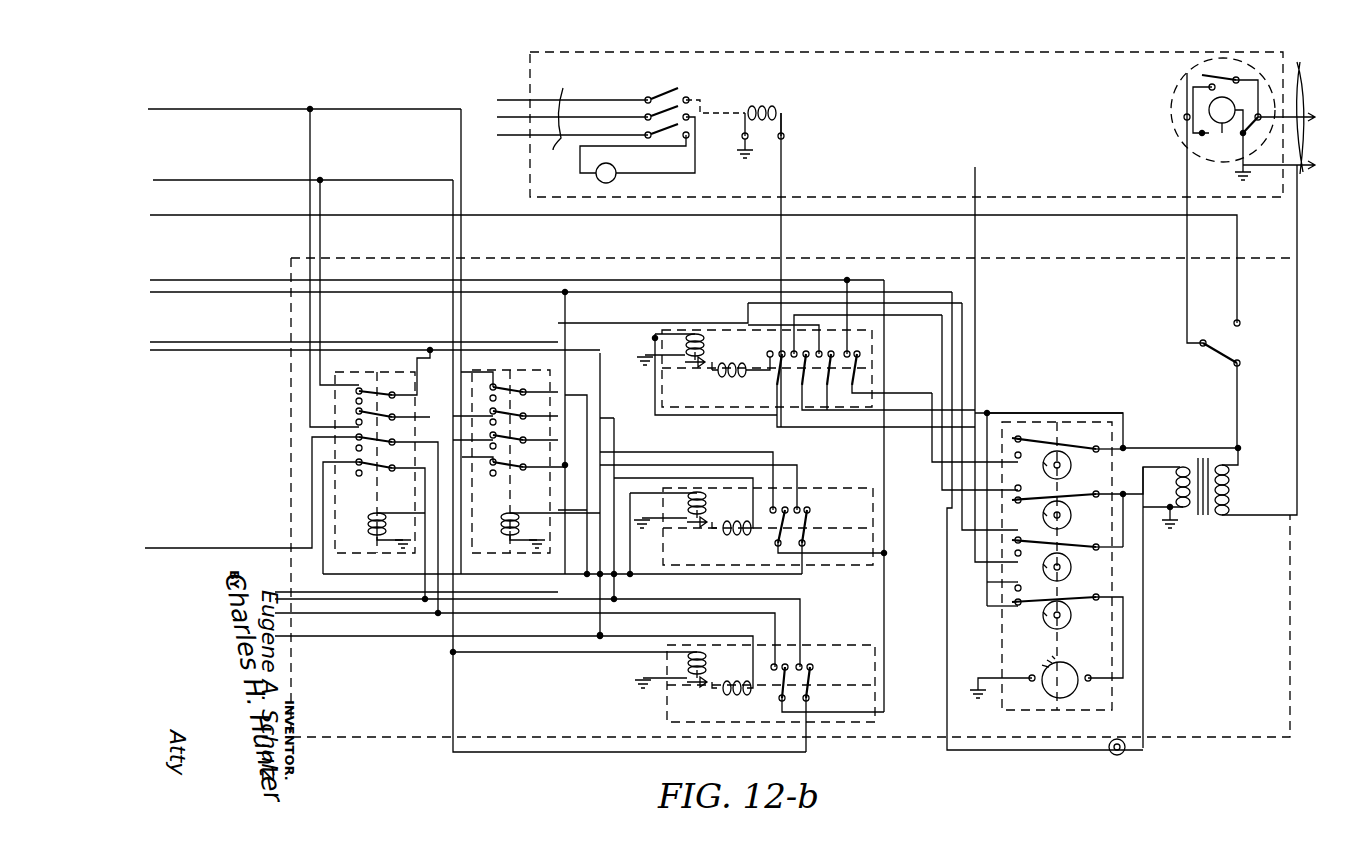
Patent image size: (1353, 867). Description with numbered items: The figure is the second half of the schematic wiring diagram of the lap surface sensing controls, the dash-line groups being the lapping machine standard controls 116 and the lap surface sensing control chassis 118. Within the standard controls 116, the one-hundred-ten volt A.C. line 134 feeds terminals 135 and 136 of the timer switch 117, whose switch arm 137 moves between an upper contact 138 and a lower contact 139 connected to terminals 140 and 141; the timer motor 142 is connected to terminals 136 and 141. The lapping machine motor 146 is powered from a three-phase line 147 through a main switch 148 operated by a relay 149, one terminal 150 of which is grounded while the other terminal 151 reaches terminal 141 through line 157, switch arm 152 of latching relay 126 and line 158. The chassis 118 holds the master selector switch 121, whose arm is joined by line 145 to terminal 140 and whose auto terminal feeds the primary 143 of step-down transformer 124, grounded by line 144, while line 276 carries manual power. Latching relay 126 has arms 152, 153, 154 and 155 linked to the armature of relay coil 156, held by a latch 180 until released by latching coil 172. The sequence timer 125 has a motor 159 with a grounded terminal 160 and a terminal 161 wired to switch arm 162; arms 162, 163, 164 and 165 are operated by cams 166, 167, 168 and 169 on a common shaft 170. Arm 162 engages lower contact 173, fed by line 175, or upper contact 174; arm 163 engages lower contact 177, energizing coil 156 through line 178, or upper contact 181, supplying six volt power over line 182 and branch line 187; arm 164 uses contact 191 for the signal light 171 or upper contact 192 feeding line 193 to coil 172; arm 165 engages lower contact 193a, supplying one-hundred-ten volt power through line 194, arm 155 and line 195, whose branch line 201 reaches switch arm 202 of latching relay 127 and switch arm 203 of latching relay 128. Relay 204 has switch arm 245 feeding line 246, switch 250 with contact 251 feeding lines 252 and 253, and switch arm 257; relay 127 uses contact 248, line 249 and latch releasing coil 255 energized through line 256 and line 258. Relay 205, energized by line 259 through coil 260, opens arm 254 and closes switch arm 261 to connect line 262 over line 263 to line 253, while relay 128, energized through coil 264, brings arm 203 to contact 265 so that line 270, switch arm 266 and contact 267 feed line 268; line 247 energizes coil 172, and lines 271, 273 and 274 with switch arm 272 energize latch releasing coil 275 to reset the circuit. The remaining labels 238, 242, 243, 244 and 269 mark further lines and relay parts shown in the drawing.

The lapping machine standard controls 116 is at (530, 72).
The timer switch 117 is at (1173, 105).
The lap surface sensing control chassis 118 is at (291, 460).
The master manual selector switch 121 is at (1212, 354).
The step-down transformer 124 is at (1208, 521).
The sequence timer 125 is at (1112, 688).
The latching relay 126 is at (873, 346).
The latching relay 127 is at (865, 472).
The latching relay 128 is at (862, 637).
The A.C. line 134 is at (1302, 112).
The terminal 135 is at (1262, 123).
The terminal 136 is at (1248, 142).
The switch arm 137 is at (1243, 80).
The upper contact 138 is at (1200, 60).
The lower contact 139 is at (1210, 87).
The terminal 140 is at (1184, 120).
The terminal 141 is at (1200, 133).
The timer motor 142 is at (1222, 133).
The primary 143 is at (1231, 490).
The line 144 is at (1297, 220).
The line 145 is at (1187, 292).
The lapping machine motor 146 is at (616, 180).
The three-phase line 147 is at (572, 109).
The main switch 148 is at (665, 80).
The relay 149 is at (765, 105).
The terminal 150 is at (757, 142).
The terminal 151 is at (785, 138).
The switch arm 152 is at (778, 380).
The switch arm 153 is at (803, 382).
The switch arm 154 is at (828, 382).
The switch arm 155 is at (856, 382).
The relay coil 156 is at (740, 378).
The line 157 is at (781, 243).
The line 158 is at (975, 281).
The motor 159 is at (1072, 689).
The terminal 160 is at (1031, 674).
The terminal 161 is at (1084, 674).
The switch arm 162 is at (1084, 600).
The switch arm 163 is at (1084, 552).
The switch arm 164 is at (1081, 500).
The switch arm 165 is at (1078, 450).
The cam 166 is at (1068, 627).
The cam 167 is at (1068, 562).
The cam 168 is at (1068, 515).
The cam 169 is at (1068, 465).
The common shaft 170 is at (987, 576).
The signal light 171 is at (1123, 755).
The latching coil 172 is at (695, 334).
The lower contact 173 is at (1025, 615).
The upper contact 174 is at (1006, 585).
The line 175 is at (1006, 607).
The lower contact 177 is at (1018, 557).
The line 178 is at (975, 550).
The latch 180 is at (687, 377).
The upper contact 181 is at (1035, 542).
The line 182 is at (165, 296).
The branch line 187 is at (563, 295).
The contact 191 is at (1030, 518).
The upper contact 192 is at (1030, 478).
The line 193 is at (930, 472).
The contact 193a is at (1018, 455).
The line 194 is at (907, 405).
The line 195 is at (186, 274).
The branch line 201 is at (884, 449).
The switch arm 202 is at (780, 558).
The switch arm 203 is at (780, 700).
The relay 204 is at (385, 555).
The relay 205 is at (527, 571).
The line 238 is at (288, 604).
The relay coil 242 is at (385, 519).
The thermal element 243 is at (725, 534).
The contact 244 is at (802, 665).
The switch arm 245 is at (383, 411).
The line 246 is at (308, 227).
The line 247 is at (175, 344).
The contact 248 is at (683, 518).
The line 249 is at (600, 400).
The switch 250 is at (380, 388).
The contact 251 is at (376, 380).
The line 252 is at (322, 237).
The line 253 is at (185, 170).
The arm 254 is at (526, 461).
The latch releasing coil 255 is at (696, 492).
The line 256 is at (660, 541).
The switch arm 257 is at (383, 461).
The line 258 is at (288, 620).
The line 259 is at (288, 643).
The coil 260 is at (520, 519).
The switch arm 261 is at (526, 411).
The line 262 is at (1095, 412).
The line 263 is at (170, 352).
The coil 264 is at (748, 693).
The contact 265 is at (778, 661).
The switch arm 266 is at (519, 393).
The contact 267 is at (512, 382).
The line 268 is at (171, 105).
The contact 269 is at (383, 436).
The line 270 is at (162, 552).
The line 271 is at (563, 603).
The switch arm 272 is at (526, 436).
The line 273 is at (453, 623).
The line 274 is at (512, 658).
The latch releasing coil 275 is at (717, 638).
The line 276 is at (182, 208).